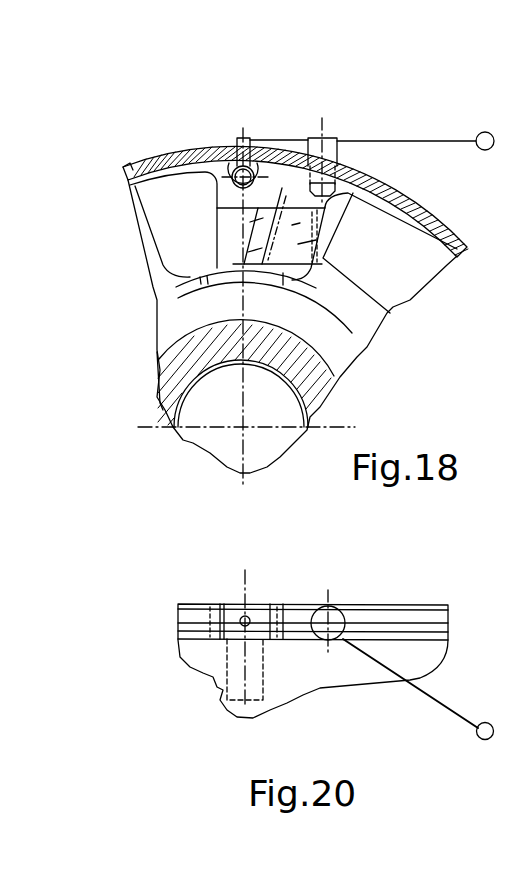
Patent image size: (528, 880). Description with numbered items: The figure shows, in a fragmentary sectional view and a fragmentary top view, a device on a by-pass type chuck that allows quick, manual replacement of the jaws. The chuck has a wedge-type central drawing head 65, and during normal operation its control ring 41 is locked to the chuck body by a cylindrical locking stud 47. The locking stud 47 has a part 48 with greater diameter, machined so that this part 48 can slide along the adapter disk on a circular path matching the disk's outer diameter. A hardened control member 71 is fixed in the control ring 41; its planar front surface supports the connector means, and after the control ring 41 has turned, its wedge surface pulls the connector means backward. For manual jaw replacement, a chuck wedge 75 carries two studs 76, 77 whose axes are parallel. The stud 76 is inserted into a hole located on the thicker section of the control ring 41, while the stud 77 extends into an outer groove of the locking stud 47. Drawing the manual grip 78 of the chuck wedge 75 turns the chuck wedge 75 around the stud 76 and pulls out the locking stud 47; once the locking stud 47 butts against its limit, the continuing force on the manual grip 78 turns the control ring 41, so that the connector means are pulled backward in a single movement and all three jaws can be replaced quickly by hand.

In FIG. 18, the control ring 41 is at (148, 164).
In FIG. 18, the locking stud 47 is at (228, 150).
In FIG. 20, the locking stud 47 is at (222, 671).
In FIG. 20, the part with greater diameter 48 is at (210, 604).
In FIG. 18, the wedge-type central drawing head 65 is at (163, 383).
In FIG. 18, the control member 71 is at (390, 313).
In FIG. 18, the chuck wedge 75 is at (372, 141).
In FIG. 20, the chuck wedge 75 is at (440, 697).
In FIG. 18, the stud 76 is at (333, 142).
In FIG. 20, the stud 76 is at (345, 608).
In FIG. 18, the stud 77 is at (248, 140).
In FIG. 20, the stud 77 is at (249, 616).
In FIG. 20, the manual grip 78 is at (476, 733).